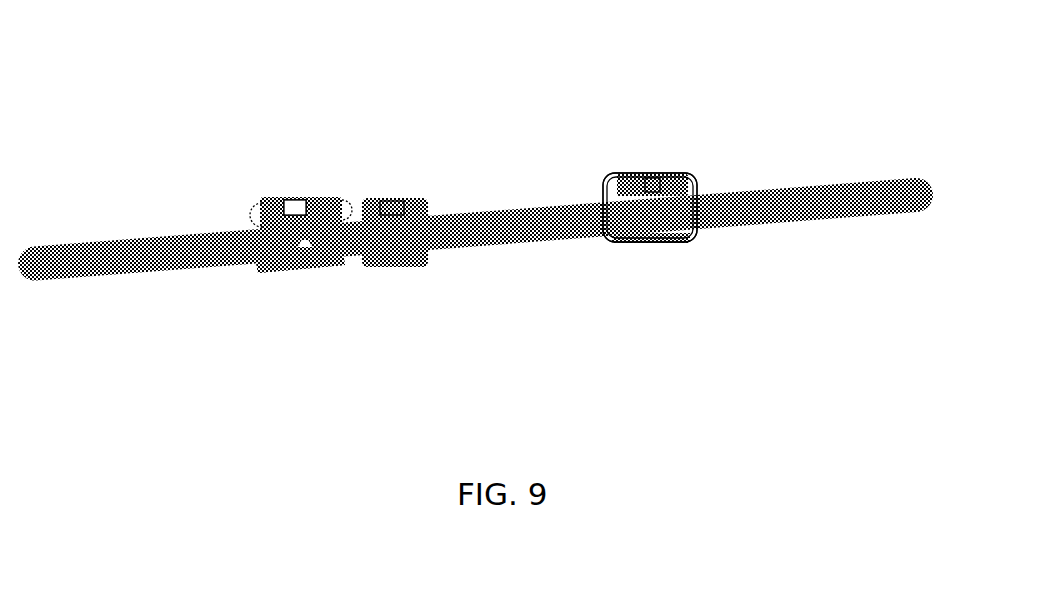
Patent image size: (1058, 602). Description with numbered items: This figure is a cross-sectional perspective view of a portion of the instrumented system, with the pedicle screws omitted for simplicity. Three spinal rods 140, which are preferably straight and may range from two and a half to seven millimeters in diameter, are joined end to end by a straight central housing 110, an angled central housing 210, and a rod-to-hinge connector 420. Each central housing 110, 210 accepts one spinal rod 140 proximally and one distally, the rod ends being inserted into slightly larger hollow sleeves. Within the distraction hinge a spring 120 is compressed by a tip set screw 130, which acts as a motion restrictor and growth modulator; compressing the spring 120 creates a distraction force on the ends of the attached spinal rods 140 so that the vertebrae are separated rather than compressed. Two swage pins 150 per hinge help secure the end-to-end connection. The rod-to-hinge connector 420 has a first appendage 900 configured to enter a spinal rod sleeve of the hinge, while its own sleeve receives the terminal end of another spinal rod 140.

The straight central housing 110 is at (251, 128).
The spring 120 is at (244, 214).
The tip set screw 130 is at (315, 196).
The spinal rod 140 is at (107, 232).
The swage pin 150 is at (314, 262).
The angled central housing 210 is at (653, 92).
The rod-to-hinge connector 420 is at (408, 185).
The first appendage 900 is at (350, 274).